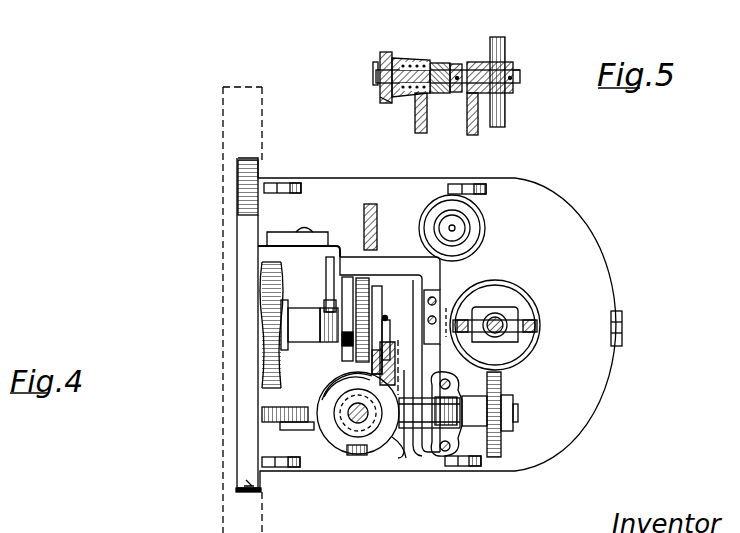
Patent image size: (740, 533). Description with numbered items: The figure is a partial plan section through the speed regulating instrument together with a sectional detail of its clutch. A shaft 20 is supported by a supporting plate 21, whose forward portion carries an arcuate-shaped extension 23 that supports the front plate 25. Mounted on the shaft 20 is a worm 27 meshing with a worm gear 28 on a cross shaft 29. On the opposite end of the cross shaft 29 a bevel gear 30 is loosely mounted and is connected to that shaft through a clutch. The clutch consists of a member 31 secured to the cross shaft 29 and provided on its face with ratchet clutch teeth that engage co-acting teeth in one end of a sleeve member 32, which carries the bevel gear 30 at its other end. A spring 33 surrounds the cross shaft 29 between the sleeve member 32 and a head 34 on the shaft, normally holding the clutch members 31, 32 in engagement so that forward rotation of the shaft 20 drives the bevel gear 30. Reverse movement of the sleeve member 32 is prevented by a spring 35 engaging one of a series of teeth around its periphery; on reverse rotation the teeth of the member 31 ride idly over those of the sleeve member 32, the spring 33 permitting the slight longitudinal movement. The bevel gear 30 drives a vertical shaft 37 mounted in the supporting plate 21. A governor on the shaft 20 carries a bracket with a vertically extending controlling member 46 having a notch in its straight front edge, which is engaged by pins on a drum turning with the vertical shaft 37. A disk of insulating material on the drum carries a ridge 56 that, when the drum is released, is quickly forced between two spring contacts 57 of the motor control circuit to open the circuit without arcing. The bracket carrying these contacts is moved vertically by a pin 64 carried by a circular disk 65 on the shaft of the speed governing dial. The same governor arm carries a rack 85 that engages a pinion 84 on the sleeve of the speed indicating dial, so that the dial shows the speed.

In FIG. 4, the shaft 20 is at (497, 320).
In FIG. 4, the supporting plate 21 is at (602, 262).
In FIG. 4, the arcuate-shaped extension 23 is at (258, 490).
In FIG. 4, the front plate 25 is at (240, 140).
In FIG. 4, the worm 27 is at (522, 310).
In FIG. 5, the worm gear 28 is at (505, 114).
In FIG. 4, the worm gear 28 is at (503, 378).
In FIG. 5, the cross shaft 29 is at (520, 80).
In FIG. 4, the cross shaft 29 is at (520, 412).
In FIG. 5, the bevel gear 30 is at (386, 55).
In FIG. 4, the bevel gear 30 is at (405, 392).
In FIG. 5, the clutch member 31 is at (456, 62).
In FIG. 4, the clutch member 31 is at (458, 400).
In FIG. 5, the sleeve member 32 is at (440, 60).
In FIG. 4, the sleeve member 32 is at (440, 380).
In FIG. 5, the spring 33 is at (380, 90).
In FIG. 5, the head 34 is at (373, 70).
In FIG. 4, the spring 35 is at (425, 445).
In FIG. 4, the vertical shaft 37 is at (352, 424).
In FIG. 4, the controlling member 46 is at (404, 455).
In FIG. 4, the insulating ridge 56 is at (328, 394).
In FIG. 4, the spring contacts 57 is at (352, 455).
In FIG. 4, the pin 64 is at (388, 320).
In FIG. 4, the circular disk 65 is at (365, 282).
In FIG. 4, the pinion 84 is at (306, 325).
In FIG. 4, the rack 85 is at (328, 275).